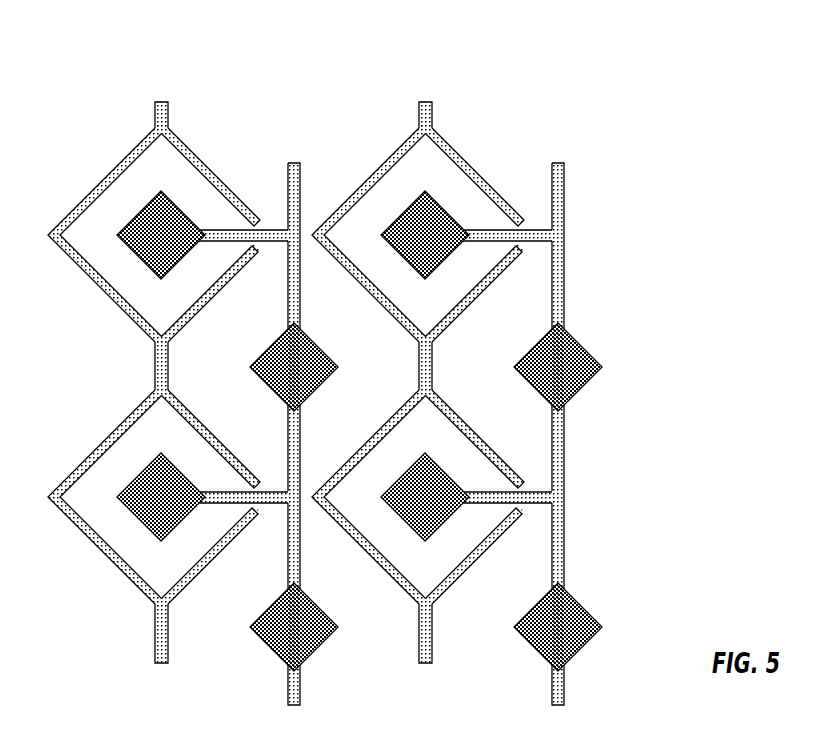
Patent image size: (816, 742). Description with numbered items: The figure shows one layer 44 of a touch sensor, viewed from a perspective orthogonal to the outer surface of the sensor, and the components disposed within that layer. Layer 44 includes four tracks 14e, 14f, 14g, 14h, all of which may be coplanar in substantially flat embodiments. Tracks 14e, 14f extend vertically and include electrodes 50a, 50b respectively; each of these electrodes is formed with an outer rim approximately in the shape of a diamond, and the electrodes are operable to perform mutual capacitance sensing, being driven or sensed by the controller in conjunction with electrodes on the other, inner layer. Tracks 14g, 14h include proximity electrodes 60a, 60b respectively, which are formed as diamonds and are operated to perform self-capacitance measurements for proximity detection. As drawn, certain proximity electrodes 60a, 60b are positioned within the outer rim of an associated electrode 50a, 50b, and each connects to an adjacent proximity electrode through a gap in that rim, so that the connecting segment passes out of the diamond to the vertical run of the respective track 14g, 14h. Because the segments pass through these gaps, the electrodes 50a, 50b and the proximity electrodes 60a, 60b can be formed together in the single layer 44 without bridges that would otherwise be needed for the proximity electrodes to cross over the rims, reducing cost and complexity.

The track 14e is at (163, 88).
The track 14f is at (427, 88).
The track 14g is at (295, 88).
The track 14h is at (559, 88).
The electrode 50a is at (95, 192).
The electrode 50b is at (377, 170).
The proximity electrode 60a is at (128, 255).
The proximity electrode 60b is at (415, 256).
The layer 44 is at (628, 533).